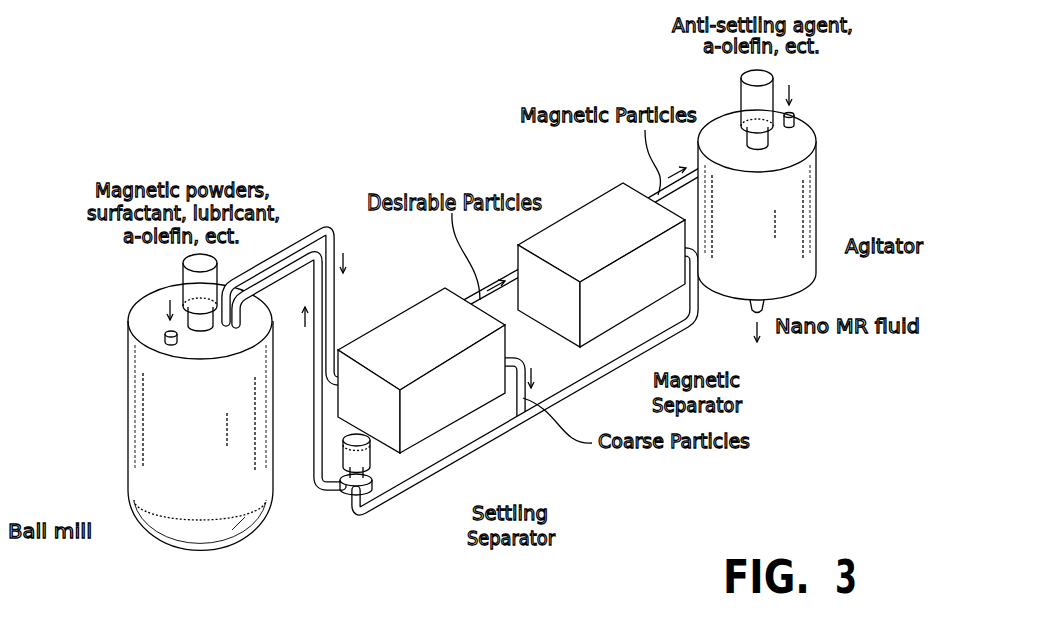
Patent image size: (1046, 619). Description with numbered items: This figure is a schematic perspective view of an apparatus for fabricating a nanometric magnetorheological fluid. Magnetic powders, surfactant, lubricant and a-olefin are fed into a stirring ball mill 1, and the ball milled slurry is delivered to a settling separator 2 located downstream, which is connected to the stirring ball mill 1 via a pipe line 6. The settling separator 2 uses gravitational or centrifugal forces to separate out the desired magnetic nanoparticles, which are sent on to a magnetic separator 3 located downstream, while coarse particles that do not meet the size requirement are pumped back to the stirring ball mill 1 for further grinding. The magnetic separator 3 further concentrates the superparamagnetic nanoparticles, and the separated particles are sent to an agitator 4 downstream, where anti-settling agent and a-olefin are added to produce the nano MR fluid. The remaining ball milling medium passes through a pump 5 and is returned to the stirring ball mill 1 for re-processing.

The stirring ball mill 1 is at (140, 432).
The settling separator 2 is at (447, 408).
The magnetic separator 3 is at (615, 305).
The agitator 4 is at (817, 175).
The pump 5 is at (348, 494).
The pipe line 6 is at (435, 478).